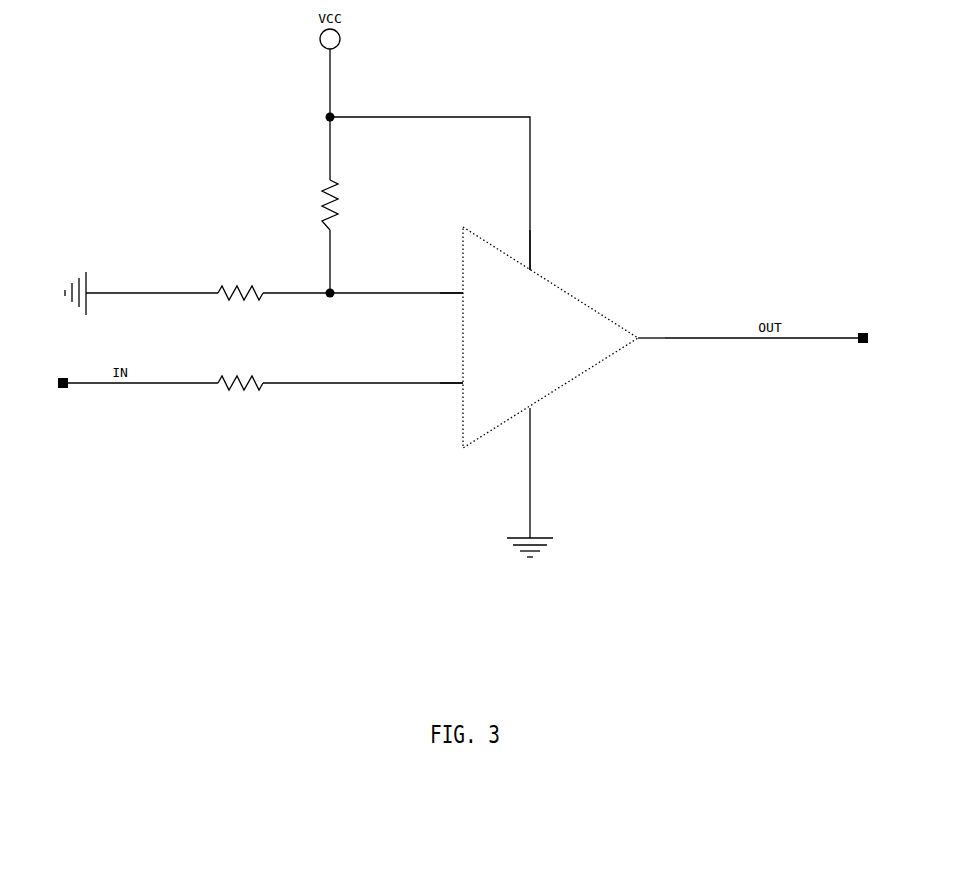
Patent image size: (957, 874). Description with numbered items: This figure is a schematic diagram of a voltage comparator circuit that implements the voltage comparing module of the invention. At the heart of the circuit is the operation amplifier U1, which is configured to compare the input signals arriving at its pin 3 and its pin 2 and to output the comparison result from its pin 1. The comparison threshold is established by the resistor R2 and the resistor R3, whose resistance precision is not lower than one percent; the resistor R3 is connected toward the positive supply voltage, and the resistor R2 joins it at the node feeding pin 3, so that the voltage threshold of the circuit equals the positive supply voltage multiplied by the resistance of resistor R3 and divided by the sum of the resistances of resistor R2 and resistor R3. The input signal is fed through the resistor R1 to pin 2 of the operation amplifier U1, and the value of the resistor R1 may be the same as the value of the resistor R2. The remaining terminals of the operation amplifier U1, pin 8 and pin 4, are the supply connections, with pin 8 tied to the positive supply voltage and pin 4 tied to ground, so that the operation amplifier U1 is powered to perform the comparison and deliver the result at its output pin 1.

The resistor R1 is at (265, 379).
The resistor R2 is at (208, 289).
The resistor R3 is at (336, 205).
The operation amplifier U1 is at (552, 339).
The pin 1 is at (651, 331).
The pin 2 is at (451, 376).
The pin 3 is at (451, 287).
The op amp negative supply pin VS- 4 is at (537, 430).
The op amp positive supply pin VS+ 8 is at (537, 250).